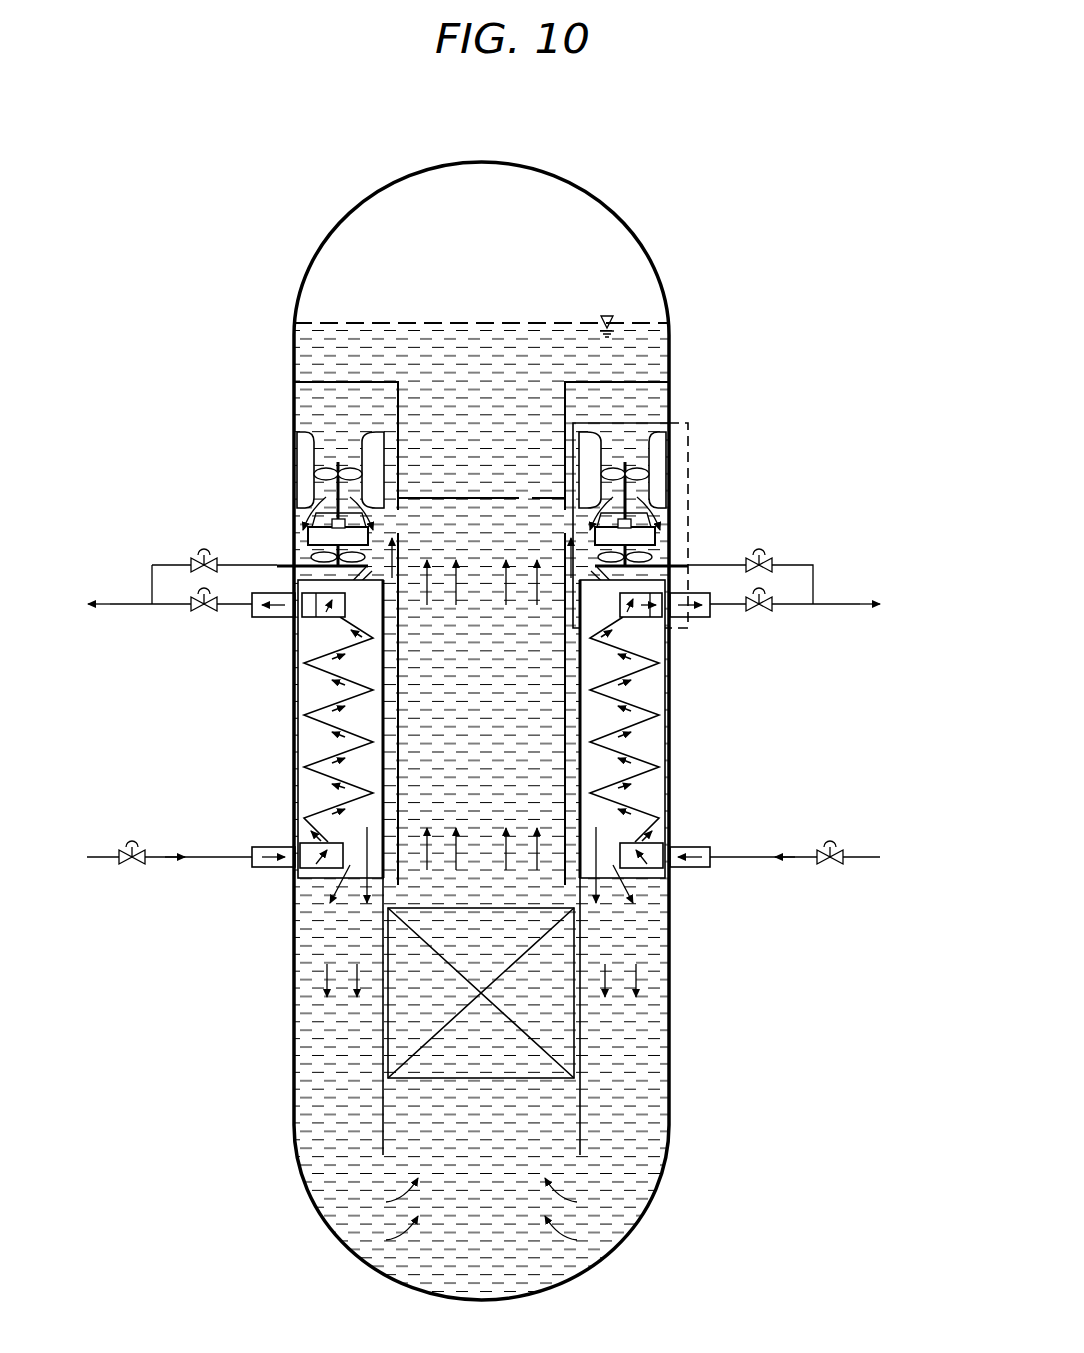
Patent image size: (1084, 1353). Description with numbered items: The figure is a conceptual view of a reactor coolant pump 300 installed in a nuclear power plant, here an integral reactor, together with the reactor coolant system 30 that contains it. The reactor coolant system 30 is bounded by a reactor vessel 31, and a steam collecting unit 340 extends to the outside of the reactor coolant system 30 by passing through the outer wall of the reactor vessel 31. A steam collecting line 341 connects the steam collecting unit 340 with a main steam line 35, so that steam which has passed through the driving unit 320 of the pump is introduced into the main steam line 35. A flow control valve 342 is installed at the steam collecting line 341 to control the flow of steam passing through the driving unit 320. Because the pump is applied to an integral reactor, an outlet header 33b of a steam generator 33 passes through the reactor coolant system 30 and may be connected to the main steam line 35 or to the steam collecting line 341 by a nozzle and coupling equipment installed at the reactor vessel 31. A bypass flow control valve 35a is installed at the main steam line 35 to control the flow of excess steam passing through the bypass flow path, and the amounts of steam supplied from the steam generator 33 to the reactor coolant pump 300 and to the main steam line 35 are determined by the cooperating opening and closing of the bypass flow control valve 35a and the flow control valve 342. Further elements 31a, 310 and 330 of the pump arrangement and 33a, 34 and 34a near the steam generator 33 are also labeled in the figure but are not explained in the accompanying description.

The reactor coolant system 30 is at (656, 194).
The reactor vessel 31 is at (326, 238).
The pump housing 31a is at (305, 432).
The reactor coolant pump 300 is at (696, 432).
The impeller 310 is at (641, 471).
The driving unit 320 is at (648, 556).
The heat exchanger inlet header 330 is at (628, 622).
The steam collecting unit 340 is at (682, 560).
The steam collecting line 341 is at (815, 585).
The flow control valve 342 is at (774, 563).
The steam generator 33 is at (668, 750).
The feedwater inlet nozzle 33a is at (697, 870).
The outlet header 33b is at (697, 618).
The feedwater line 34 is at (95, 860).
The feedwater valve 34a is at (137, 862).
The main steam line 35 is at (133, 606).
The bypass flow control valve 35a is at (207, 608).